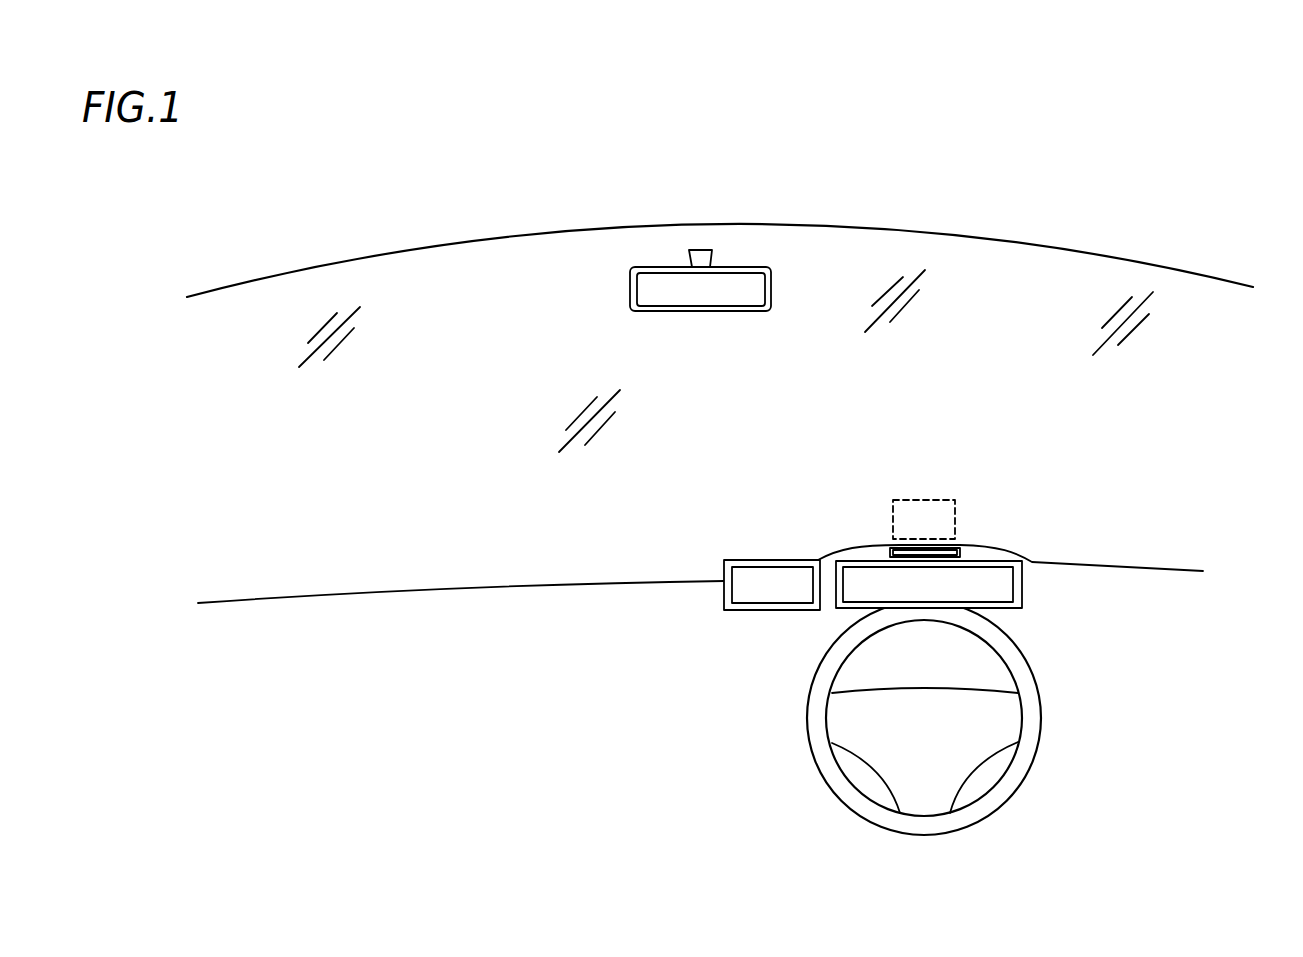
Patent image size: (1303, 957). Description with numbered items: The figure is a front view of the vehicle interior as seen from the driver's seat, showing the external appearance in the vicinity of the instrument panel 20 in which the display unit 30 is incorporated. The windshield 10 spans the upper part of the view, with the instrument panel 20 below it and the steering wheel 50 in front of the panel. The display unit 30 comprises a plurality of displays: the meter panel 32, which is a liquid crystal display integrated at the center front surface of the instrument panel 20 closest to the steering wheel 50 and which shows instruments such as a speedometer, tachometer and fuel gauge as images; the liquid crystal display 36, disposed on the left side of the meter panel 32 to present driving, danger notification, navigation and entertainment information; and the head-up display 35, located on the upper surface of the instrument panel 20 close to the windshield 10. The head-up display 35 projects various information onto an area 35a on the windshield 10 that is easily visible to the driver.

The windshield 10 is at (720, 322).
The instrument panel 20 is at (675, 595).
The display unit 30 is at (1157, 426).
The meter panel 32 is at (992, 590).
The head-up display 35 is at (957, 548).
The area 35a is at (953, 502).
The liquid crystal display 36 is at (758, 560).
The steering wheel 50 is at (1022, 760).